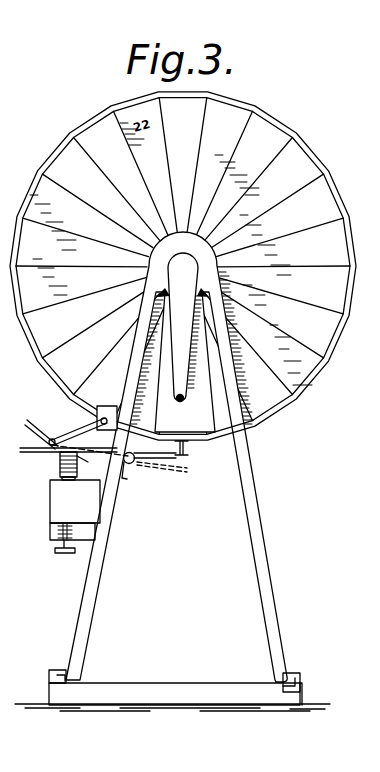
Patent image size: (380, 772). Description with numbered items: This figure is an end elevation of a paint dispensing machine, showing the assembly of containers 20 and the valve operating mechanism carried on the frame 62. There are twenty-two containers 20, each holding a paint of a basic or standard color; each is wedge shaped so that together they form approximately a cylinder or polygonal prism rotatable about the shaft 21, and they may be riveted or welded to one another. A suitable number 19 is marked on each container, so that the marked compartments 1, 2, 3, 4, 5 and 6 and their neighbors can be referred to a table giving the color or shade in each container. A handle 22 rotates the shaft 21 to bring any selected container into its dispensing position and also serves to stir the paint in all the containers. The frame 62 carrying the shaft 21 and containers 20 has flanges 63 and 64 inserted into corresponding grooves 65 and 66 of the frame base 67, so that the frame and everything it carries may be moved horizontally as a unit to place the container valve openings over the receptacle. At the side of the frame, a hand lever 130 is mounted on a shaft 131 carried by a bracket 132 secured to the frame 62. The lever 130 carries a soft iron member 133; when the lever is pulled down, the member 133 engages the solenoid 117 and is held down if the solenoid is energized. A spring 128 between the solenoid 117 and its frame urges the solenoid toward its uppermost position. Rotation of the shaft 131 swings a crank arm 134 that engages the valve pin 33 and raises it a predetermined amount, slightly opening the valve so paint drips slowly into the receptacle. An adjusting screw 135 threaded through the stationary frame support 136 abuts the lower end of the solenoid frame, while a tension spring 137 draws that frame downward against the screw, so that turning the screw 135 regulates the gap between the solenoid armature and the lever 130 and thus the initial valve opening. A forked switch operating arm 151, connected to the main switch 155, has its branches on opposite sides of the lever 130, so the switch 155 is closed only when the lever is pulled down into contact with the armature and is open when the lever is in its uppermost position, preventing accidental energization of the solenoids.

The wheel segment 1 is at (193, 165).
The wheel segment 2 is at (224, 173).
The wheel segment 3 is at (249, 187).
The wheel segment 4 is at (267, 205).
The wheel segment 5 is at (280, 228).
The wheel segment 6 is at (283, 254).
The number 19 is at (269, 138).
The container 20 is at (325, 153).
The shaft 21 is at (118, 137).
The handle 22 is at (187, 380).
The valve pin 33 is at (188, 447).
The frame 62 is at (270, 578).
The flange 63 is at (48, 683).
The flange 64 is at (300, 680).
The groove 65 is at (60, 670).
The groove 66 is at (292, 673).
The frame base 67 is at (178, 686).
The solenoid 117 is at (60, 470).
The spring 128 is at (75, 479).
The hand lever 130 is at (22, 452).
The shaft 131 is at (133, 462).
The bracket 132 is at (124, 466).
The soft iron member 133 is at (95, 463).
The crank arm 134 is at (192, 467).
The adjusting screw 135 is at (62, 553).
The frame support 136 is at (50, 515).
The tension spring 137 is at (50, 535).
The switch operating arm 151 is at (80, 437).
The main switch 155 is at (107, 406).